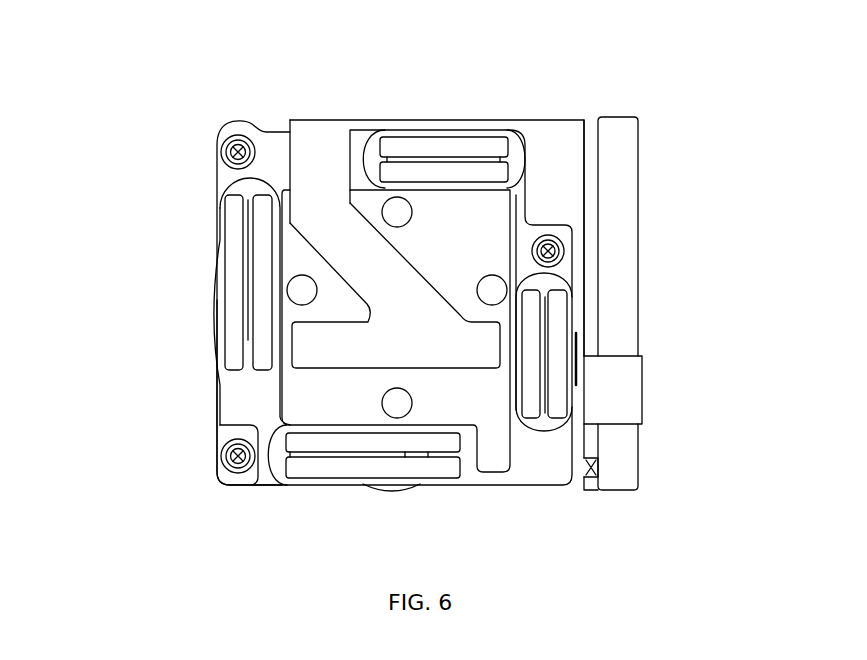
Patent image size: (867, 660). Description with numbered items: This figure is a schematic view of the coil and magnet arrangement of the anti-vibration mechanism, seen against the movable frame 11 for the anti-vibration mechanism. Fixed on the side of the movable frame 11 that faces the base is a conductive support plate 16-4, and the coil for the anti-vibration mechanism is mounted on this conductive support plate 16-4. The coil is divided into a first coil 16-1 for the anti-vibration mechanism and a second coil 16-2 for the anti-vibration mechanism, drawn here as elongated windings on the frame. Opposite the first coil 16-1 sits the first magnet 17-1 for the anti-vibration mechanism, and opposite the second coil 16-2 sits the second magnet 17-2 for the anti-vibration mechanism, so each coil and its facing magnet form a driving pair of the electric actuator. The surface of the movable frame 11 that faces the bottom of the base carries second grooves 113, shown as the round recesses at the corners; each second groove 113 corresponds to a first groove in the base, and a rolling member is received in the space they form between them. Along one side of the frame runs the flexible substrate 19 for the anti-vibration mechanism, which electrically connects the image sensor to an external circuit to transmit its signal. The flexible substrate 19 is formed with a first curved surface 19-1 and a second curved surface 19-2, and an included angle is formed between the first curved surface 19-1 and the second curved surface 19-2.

The movable frame for the anti-vibration mechanism 11 is at (222, 172).
The second groove 113 is at (238, 147).
The first coil for the anti-vibration mechanism 16-1 is at (235, 192).
The second coil for the anti-vibration mechanism 16-2 is at (513, 155).
The conductive support plate 16-4 is at (233, 393).
The first magnet for the anti-vibration mechanism 17-1 is at (234, 258).
The second magnet for the anti-vibration mechanism 17-2 is at (427, 148).
The flexible substrate for the anti-vibration mechanism 19 is at (617, 243).
The first curved surface 19-1 is at (524, 120).
The second curved surface 19-2 is at (583, 187).